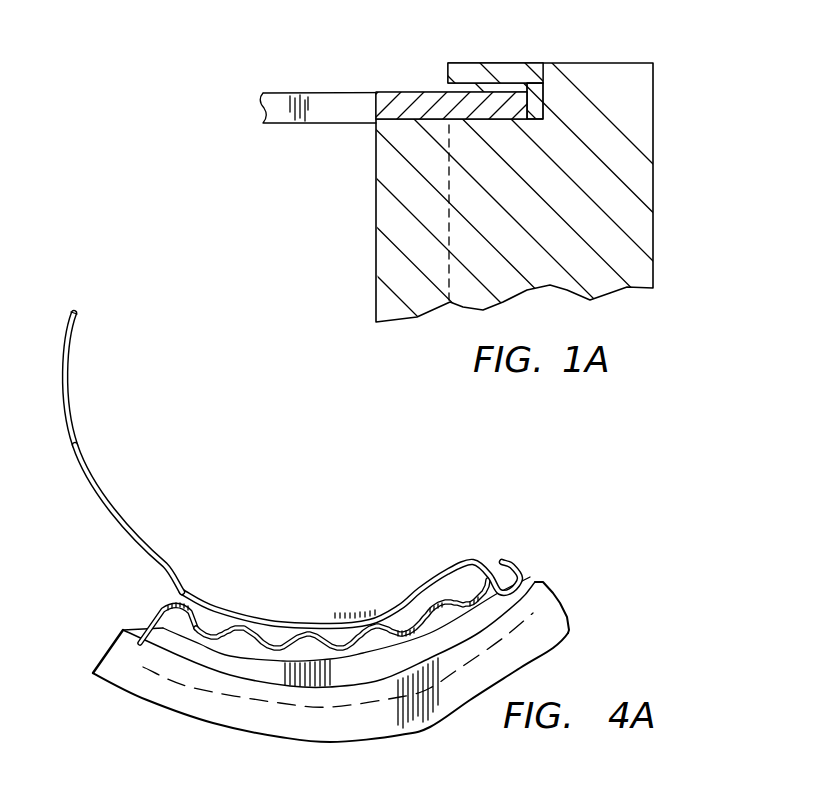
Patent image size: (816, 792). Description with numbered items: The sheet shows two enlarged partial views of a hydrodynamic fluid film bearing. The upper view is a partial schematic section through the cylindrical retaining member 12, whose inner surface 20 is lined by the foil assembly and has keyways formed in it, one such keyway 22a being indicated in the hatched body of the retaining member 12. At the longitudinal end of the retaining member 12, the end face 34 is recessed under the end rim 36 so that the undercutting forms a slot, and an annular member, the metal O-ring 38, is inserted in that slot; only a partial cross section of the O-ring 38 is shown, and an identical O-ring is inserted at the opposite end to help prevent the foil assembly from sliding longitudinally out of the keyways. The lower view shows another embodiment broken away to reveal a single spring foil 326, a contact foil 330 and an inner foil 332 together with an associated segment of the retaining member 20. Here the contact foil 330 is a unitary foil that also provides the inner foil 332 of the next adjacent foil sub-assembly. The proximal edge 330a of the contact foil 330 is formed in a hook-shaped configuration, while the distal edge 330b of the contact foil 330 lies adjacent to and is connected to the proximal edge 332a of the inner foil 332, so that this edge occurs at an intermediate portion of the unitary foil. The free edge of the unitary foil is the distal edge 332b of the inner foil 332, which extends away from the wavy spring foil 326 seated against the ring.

In FIG. 1A, the retaining member 12 is at (653, 91).
In FIG. 1A, the inner surface 20 is at (385, 270).
In FIG. 4A, the inner surface 20 is at (138, 627).
In FIG. 1A, the keyway 22a is at (410, 182).
In FIG. 1A, the end face 34 is at (540, 112).
In FIG. 1A, the end rim 36 is at (482, 62).
In FIG. 1A, the metal O-ring 38 is at (403, 90).
In FIG. 4A, the spring foil 326 is at (253, 643).
In FIG. 4A, the contact foil 330 is at (363, 606).
In FIG. 4A, the proximal edge of contact foil 330a is at (557, 528).
In FIG. 4A, the distal edge of contact foil 330b is at (313, 586).
In FIG. 4A, the inner foil 332 is at (93, 472).
In FIG. 4A, the proximal edge of inner foil 332a is at (287, 550).
In FIG. 4A, the distal edge of inner foil 332b is at (195, 331).